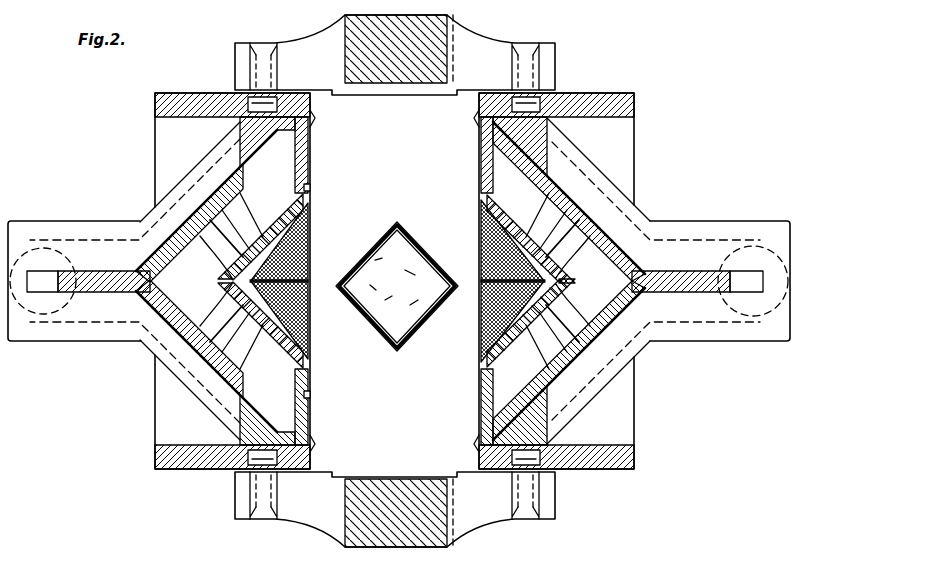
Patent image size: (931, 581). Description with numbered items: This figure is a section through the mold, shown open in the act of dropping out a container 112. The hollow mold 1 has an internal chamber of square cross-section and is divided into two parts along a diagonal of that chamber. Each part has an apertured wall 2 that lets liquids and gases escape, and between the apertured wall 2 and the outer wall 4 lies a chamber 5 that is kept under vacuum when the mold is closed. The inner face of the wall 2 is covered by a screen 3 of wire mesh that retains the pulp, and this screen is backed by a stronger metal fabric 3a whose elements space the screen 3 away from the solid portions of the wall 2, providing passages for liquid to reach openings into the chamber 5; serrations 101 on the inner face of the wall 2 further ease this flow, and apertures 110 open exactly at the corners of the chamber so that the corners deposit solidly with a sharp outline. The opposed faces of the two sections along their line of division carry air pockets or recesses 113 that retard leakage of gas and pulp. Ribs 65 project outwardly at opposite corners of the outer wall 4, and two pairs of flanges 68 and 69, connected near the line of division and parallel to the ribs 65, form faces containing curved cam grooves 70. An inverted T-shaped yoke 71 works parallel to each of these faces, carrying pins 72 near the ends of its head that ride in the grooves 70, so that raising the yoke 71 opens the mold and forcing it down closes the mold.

The hollow mold 1 is at (218, 190).
The apertured wall 2 is at (168, 370).
The screen 3 is at (313, 335).
The supporting metal fabric 3a is at (280, 358).
The outer wall 4 is at (634, 385).
The chamber 5 is at (640, 438).
The ribs 65 is at (88, 288).
The flanges 68 is at (192, 470).
The flanges 69 is at (200, 93).
The curved cam grooves 70 is at (312, 118).
The inverted T-shaped yoke 71 is at (548, 68).
The pins 72 is at (250, 98).
The serrations 101 is at (230, 310).
The apertures 110 is at (205, 220).
The container 112 is at (410, 226).
The air pockets or recesses 113 is at (315, 188).